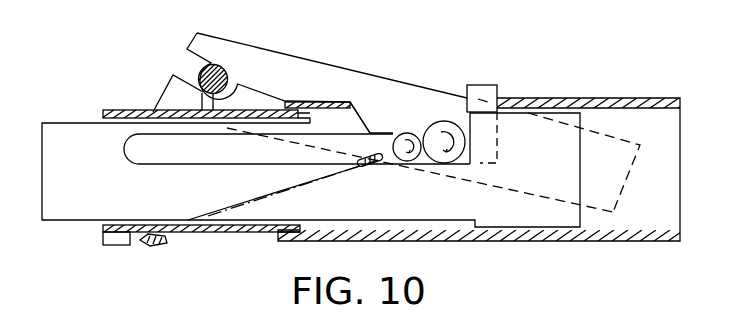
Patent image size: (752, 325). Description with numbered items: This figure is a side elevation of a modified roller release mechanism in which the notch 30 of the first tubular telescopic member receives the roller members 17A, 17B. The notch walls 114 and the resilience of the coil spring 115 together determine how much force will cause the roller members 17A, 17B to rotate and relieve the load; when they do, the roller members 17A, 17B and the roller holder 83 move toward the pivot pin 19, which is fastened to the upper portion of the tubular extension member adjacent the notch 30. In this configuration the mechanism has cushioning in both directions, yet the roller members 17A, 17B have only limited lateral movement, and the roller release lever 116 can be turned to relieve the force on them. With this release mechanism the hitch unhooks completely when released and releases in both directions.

The pivot pin 19 is at (198, 72).
The roller holder 83 is at (235, 43).
The notch walls 114 is at (373, 130).
The roller member 17A is at (403, 134).
The roller member 17B is at (447, 121).
The roller release lever 116 is at (124, 152).
The coil spring 115 is at (293, 188).
The notch 30 is at (430, 170).